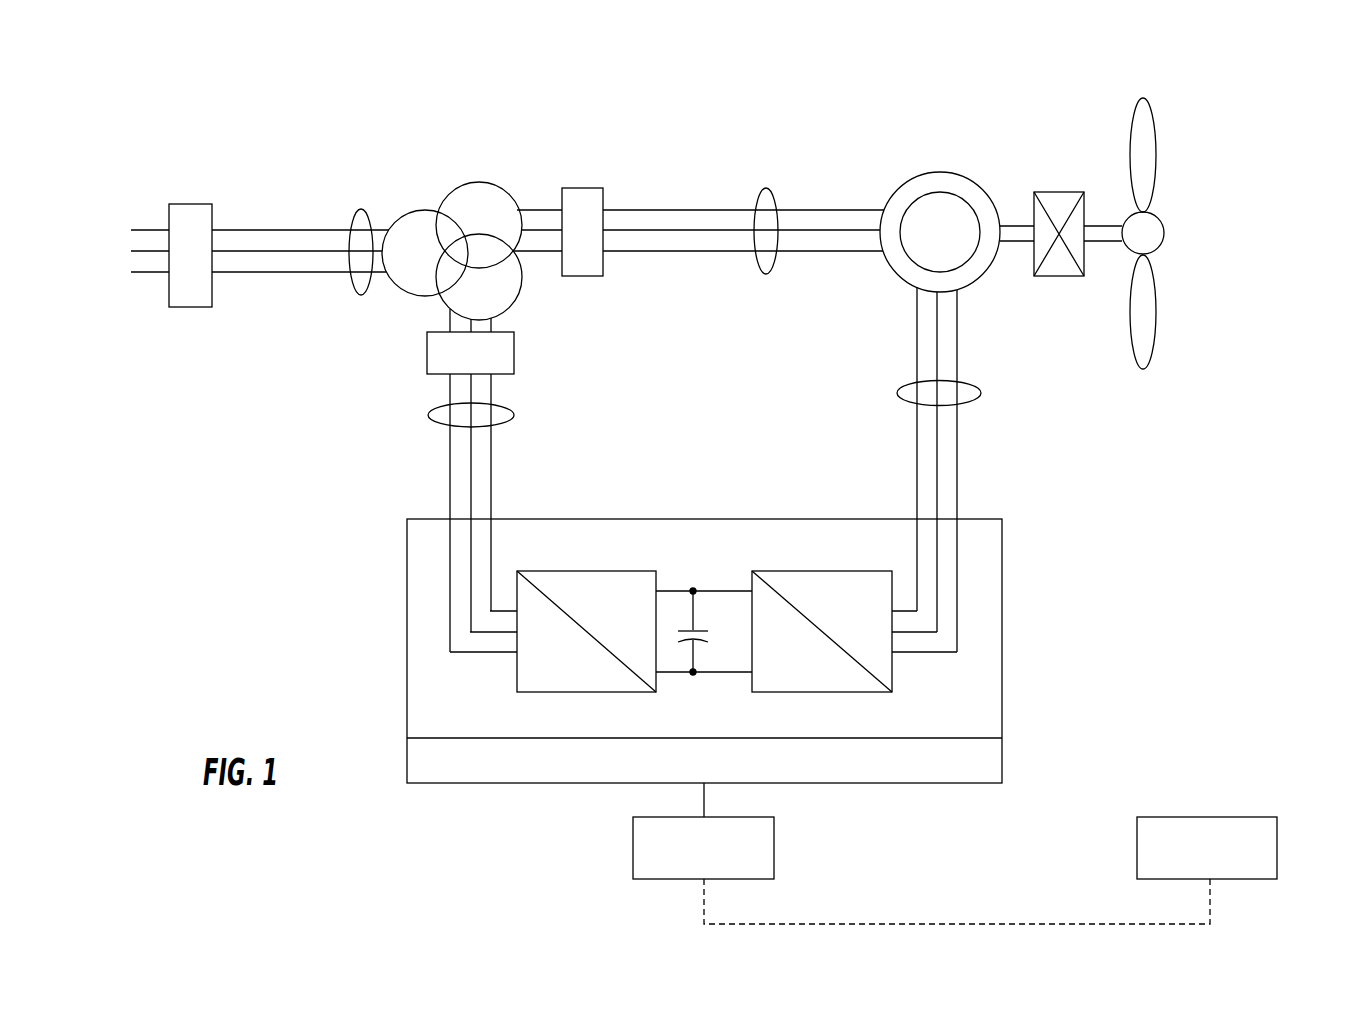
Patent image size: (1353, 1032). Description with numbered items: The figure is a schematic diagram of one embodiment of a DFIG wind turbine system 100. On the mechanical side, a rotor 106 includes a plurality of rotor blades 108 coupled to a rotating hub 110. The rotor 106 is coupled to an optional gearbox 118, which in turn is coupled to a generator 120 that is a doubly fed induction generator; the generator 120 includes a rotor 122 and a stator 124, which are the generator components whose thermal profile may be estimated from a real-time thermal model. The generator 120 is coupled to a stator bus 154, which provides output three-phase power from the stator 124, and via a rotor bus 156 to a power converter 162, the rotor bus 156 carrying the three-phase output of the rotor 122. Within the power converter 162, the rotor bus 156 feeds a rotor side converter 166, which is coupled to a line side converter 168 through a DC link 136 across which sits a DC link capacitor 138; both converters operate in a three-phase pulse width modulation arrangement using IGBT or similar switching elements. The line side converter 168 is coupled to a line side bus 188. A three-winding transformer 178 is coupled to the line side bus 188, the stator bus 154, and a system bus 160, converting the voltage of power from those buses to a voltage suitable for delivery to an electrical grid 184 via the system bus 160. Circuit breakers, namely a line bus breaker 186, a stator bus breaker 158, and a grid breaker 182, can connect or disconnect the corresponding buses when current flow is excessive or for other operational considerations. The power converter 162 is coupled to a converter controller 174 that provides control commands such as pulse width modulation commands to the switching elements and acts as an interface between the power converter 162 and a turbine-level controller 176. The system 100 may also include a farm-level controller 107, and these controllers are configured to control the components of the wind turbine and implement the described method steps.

The wind turbine system 100 is at (812, 88).
The rotor 106 is at (1193, 228).
The farm-level controller 107 is at (1277, 847).
The rotor blades 108 is at (1155, 150).
The rotating hub 110 is at (1165, 233).
The gearbox 118 is at (1060, 192).
The doubly fed induction generator (DFIG) 120 is at (929, 230).
The rotor 122 is at (970, 206).
The stator 124 is at (892, 270).
The DC link 136 is at (712, 591).
The DC link capacitor 138 is at (688, 644).
The stator bus 154 is at (767, 188).
The rotor bus 156 is at (982, 393).
The stator bus breaker 158 is at (582, 188).
The system bus 160 is at (364, 210).
The power converter 162 is at (737, 651).
The rotor side converter 166 is at (892, 676).
The line side converter 168 is at (517, 676).
The converter controller 174 is at (1003, 760).
The turbine-level controller 176 is at (774, 847).
The transformer 178 is at (479, 182).
The grid breaker 182 is at (192, 204).
The electrical grid 184 is at (104, 240).
The line bus breaker 186 is at (427, 357).
The line side bus 188 is at (428, 417).